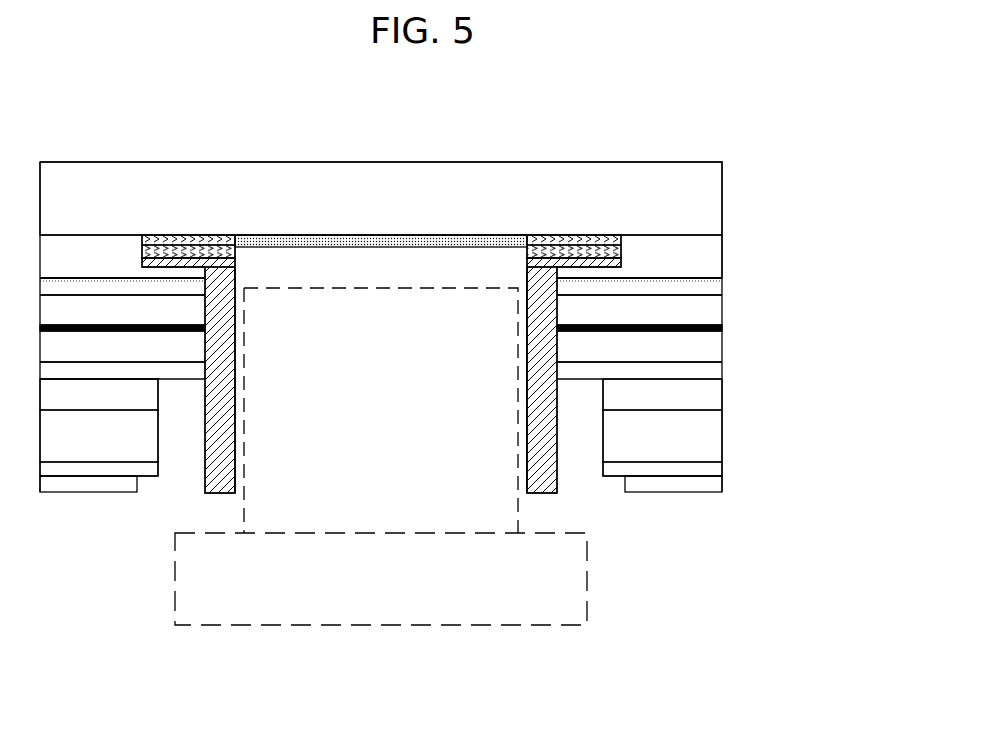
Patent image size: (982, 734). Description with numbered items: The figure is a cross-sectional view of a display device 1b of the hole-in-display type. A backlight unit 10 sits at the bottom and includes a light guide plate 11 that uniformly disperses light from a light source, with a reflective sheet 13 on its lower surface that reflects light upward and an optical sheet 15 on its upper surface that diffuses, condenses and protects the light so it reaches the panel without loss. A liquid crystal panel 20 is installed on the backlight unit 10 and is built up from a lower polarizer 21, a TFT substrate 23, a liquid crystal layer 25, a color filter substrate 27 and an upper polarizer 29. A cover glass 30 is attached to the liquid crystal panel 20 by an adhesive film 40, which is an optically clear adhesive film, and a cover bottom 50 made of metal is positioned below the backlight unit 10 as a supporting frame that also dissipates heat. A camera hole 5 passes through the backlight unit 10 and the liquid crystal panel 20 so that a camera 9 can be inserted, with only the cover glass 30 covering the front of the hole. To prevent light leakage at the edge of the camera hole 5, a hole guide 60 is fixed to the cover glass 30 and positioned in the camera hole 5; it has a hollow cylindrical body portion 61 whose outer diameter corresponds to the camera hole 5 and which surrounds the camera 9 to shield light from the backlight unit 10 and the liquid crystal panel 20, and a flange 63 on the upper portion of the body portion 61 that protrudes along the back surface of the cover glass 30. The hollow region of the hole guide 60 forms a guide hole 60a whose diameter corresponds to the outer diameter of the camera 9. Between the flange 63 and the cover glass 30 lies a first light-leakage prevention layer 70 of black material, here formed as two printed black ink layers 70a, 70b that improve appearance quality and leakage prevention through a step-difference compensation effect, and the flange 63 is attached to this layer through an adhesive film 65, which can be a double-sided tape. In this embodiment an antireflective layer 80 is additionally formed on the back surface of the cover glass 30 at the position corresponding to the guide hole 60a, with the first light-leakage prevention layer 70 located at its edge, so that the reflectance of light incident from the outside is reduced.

The display device 1b is at (62, 110).
The camera hole 5 is at (188, 400).
The camera 9 is at (587, 578).
The backlight unit 10 is at (797, 395).
The light guide plate 11 is at (722, 436).
The reflective sheet 13 is at (722, 468).
The optical sheet 15 is at (722, 397).
The liquid crystal panel 20 is at (797, 283).
The lower polarizer 21 is at (722, 372).
The TFT substrate 23 is at (722, 352).
The liquid crystal layer 25 is at (722, 328).
The color filter substrate 27 is at (722, 305).
The upper polarizer 29 is at (722, 285).
The cover glass 30 is at (722, 206).
The adhesive film 40 is at (722, 255).
The cover bottom 50 is at (722, 487).
The hole guide 60 is at (676, 548).
The guide hole 60a is at (237, 368).
The body portion 61 is at (557, 421).
The flange 63 is at (588, 268).
The adhesive film 65 is at (612, 233).
The first light-leakage prevention layer 70 is at (590, 115).
The first light-leakage prevention layer 70a is at (543, 238).
The first light-leakage prevention layer 70b is at (576, 240).
The antireflective layer 80 is at (412, 235).